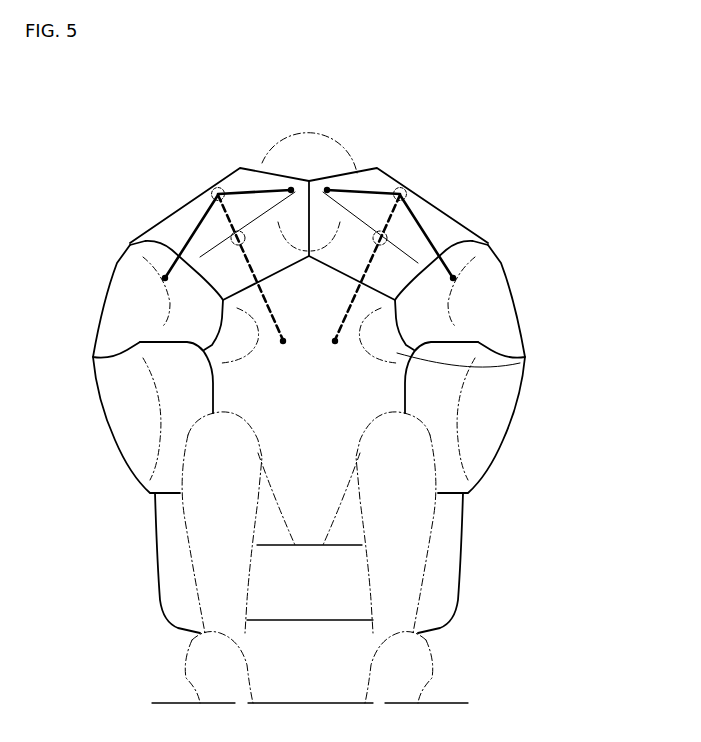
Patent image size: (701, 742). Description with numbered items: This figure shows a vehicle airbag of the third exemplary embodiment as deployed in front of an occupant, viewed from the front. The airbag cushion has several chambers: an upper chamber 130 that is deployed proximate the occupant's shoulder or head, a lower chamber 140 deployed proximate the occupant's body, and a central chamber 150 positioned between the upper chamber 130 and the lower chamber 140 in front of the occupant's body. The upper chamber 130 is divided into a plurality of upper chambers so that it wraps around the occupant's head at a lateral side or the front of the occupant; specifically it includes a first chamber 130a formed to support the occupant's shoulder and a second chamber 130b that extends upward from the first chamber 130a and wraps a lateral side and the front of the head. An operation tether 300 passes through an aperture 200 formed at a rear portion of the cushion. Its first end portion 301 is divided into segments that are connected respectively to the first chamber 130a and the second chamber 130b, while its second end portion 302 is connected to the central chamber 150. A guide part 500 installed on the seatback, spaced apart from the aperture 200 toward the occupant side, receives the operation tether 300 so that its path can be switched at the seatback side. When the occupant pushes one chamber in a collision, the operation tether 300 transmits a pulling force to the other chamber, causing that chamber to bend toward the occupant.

The upper chamber 130 is at (379, 346).
The first chamber 130a is at (351, 408).
The second chamber 130b is at (413, 242).
The lower chamber 140 is at (493, 433).
The central chamber 150 is at (520, 363).
The aperture 200 is at (216, 188).
The operation tether 300 is at (200, 223).
The first end portion 301 is at (247, 190).
The second end portion 302 is at (223, 318).
The guide part 500 is at (242, 231).